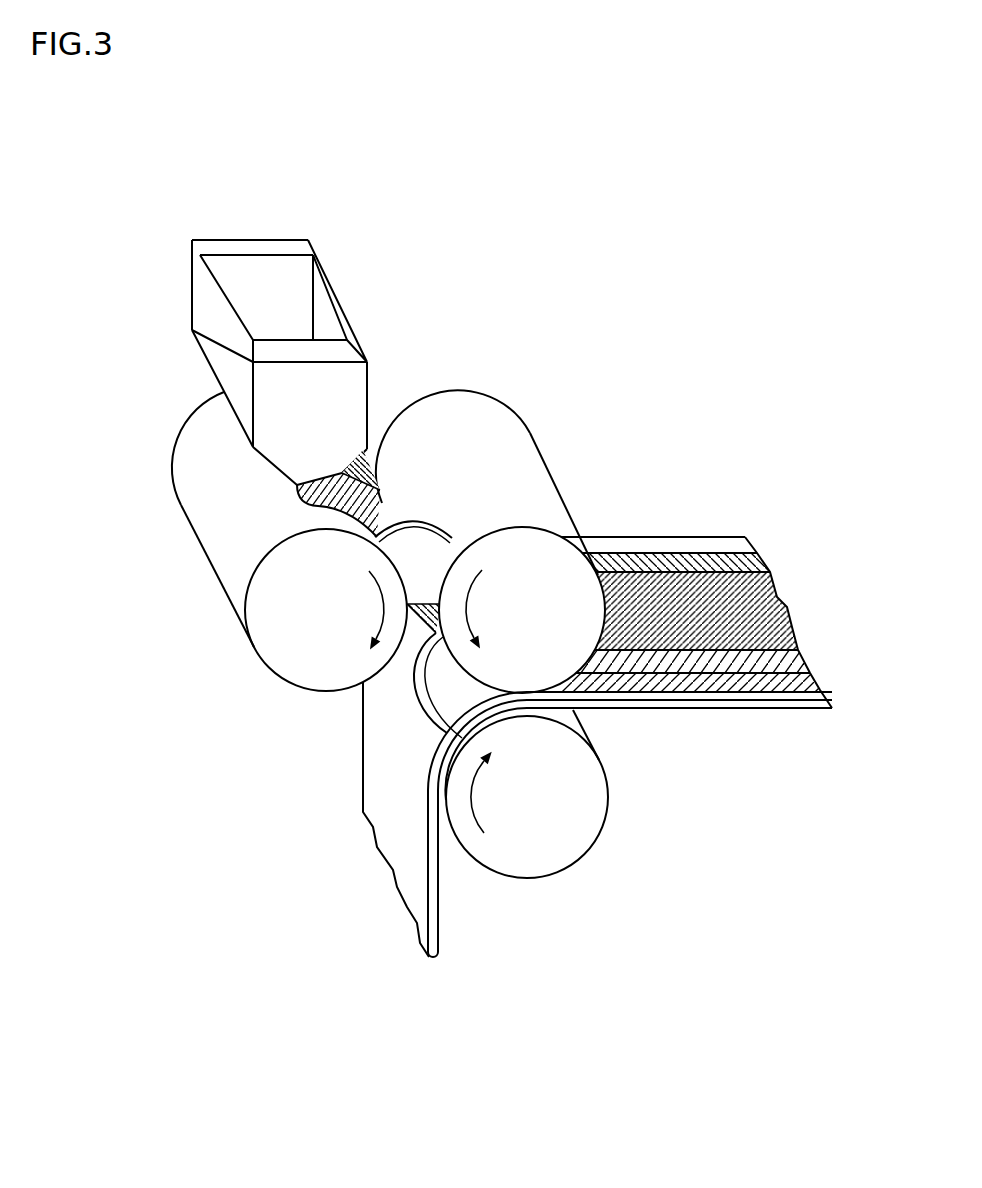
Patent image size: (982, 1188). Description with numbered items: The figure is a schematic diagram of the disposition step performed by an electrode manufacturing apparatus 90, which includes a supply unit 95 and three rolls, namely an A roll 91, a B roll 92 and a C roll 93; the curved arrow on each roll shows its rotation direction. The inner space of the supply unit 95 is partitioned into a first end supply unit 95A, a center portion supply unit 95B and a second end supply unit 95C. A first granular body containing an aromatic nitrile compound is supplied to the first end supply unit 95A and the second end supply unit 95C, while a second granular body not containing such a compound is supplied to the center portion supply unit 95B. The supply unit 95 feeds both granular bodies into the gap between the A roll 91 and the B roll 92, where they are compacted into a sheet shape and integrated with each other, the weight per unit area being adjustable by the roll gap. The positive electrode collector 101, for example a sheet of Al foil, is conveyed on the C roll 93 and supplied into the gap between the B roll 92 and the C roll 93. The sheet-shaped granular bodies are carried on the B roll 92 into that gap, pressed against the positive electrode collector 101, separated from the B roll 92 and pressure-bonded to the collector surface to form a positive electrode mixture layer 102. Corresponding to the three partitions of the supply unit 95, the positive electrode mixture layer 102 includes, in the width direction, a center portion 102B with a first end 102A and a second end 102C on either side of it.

The electrode manufacturing apparatus 90 is at (548, 177).
The A roll 91 is at (193, 430).
The B roll 92 is at (487, 403).
The C roll 93 is at (588, 833).
The supply unit 95 is at (192, 191).
The first end supply unit 95A is at (222, 247).
The center portion supply unit 95B is at (282, 287).
The second end supply unit 95C is at (350, 353).
The positive electrode collector 101 is at (395, 849).
The positive electrode mixture layer 102 is at (817, 487).
The first end 102A is at (637, 555).
The center portion 102B is at (707, 607).
The second end 102C is at (788, 662).